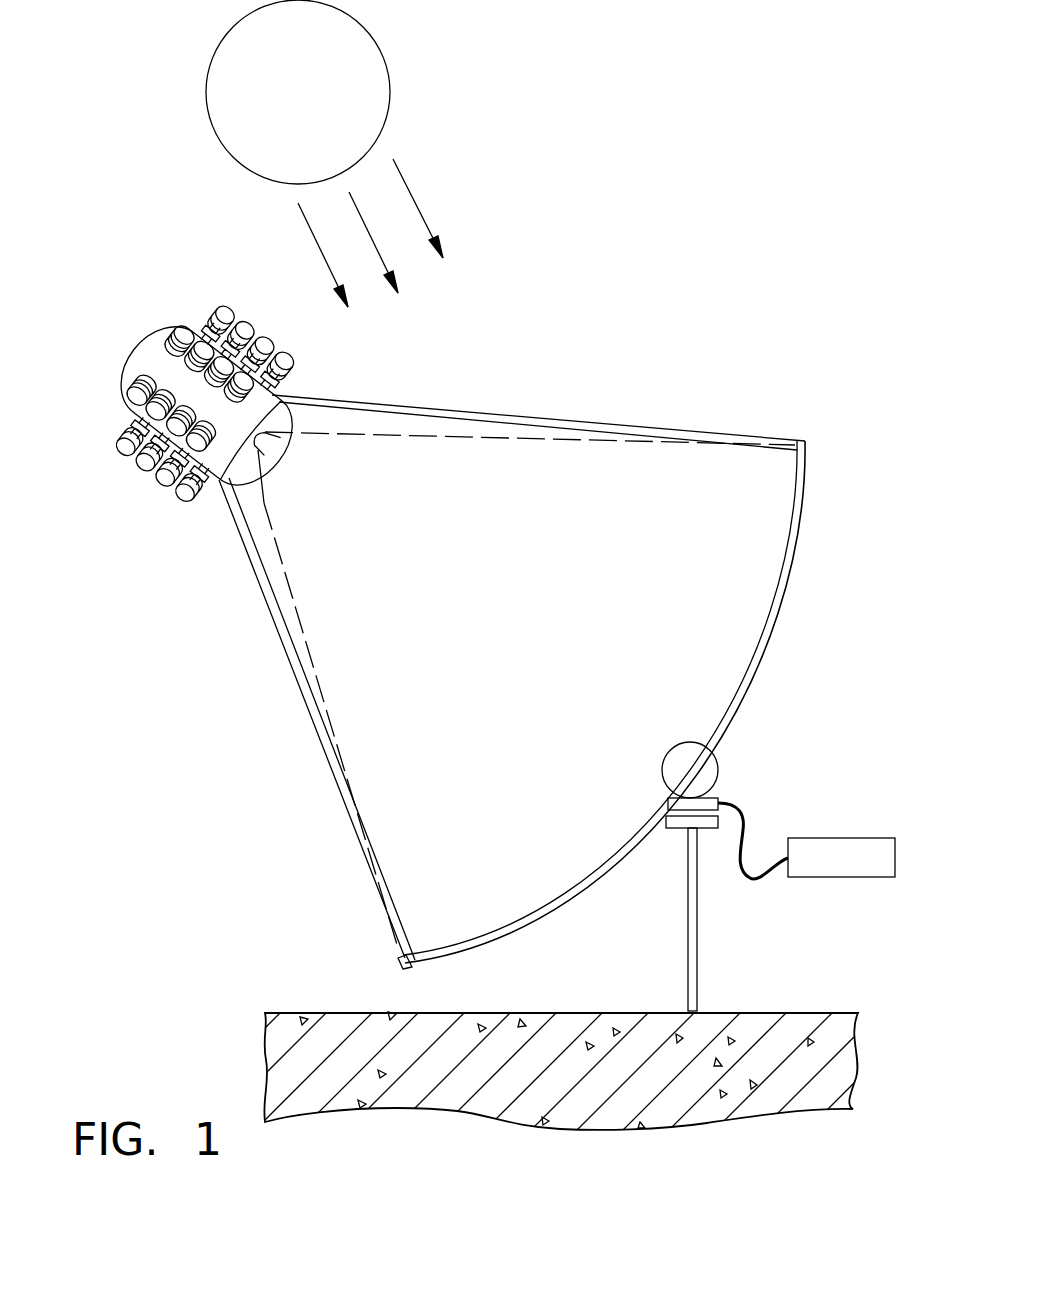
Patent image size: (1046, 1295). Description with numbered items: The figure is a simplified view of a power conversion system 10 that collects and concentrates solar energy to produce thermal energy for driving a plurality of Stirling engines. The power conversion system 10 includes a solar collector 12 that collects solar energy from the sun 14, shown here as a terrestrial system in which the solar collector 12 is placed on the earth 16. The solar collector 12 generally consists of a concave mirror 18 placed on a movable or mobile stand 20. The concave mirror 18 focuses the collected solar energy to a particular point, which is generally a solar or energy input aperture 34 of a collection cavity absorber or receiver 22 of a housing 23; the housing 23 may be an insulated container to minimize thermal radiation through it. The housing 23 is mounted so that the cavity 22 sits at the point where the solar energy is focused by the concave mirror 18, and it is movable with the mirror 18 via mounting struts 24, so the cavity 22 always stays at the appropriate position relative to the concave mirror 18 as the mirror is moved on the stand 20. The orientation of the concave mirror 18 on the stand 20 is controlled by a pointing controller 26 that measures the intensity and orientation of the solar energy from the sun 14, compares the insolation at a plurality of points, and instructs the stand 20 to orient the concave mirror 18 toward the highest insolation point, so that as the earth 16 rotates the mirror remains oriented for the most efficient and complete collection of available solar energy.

The power conversion system 10 is at (708, 150).
The solar collector 12 is at (643, 705).
The sun 14 is at (307, 105).
The earth 16 is at (313, 1012).
The concave mirror 18 is at (770, 605).
The movable stand 20 is at (697, 912).
The collection cavity absorber or receiver 22 is at (148, 340).
The housing 23 is at (157, 348).
The mounting struts 24 is at (560, 410).
The pointing controller 26 is at (815, 838).
The solar or energy input aperture 34 is at (262, 445).